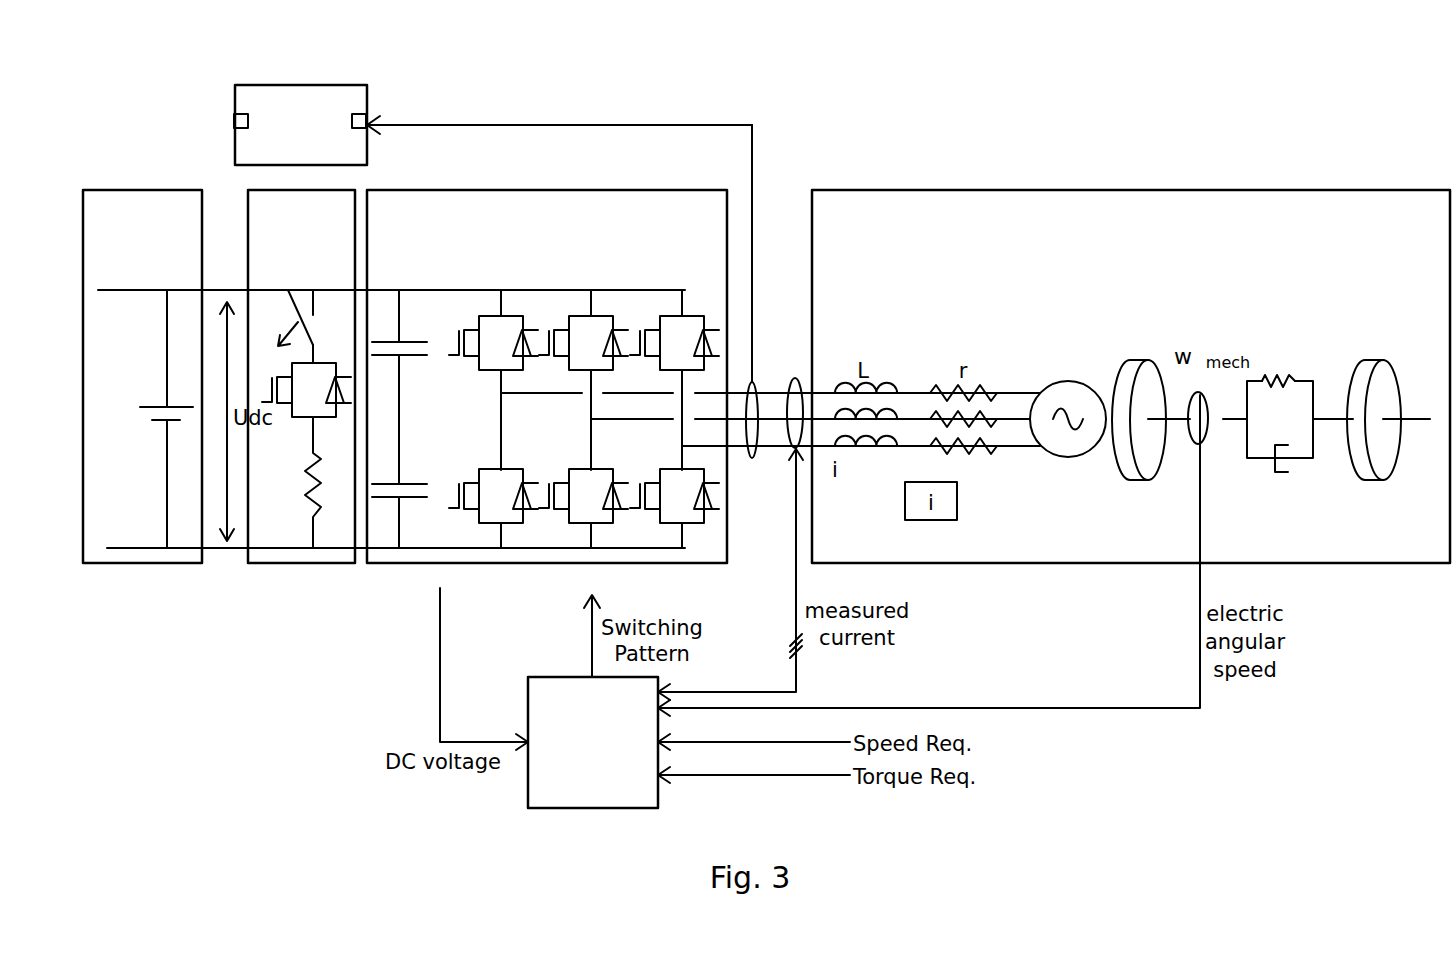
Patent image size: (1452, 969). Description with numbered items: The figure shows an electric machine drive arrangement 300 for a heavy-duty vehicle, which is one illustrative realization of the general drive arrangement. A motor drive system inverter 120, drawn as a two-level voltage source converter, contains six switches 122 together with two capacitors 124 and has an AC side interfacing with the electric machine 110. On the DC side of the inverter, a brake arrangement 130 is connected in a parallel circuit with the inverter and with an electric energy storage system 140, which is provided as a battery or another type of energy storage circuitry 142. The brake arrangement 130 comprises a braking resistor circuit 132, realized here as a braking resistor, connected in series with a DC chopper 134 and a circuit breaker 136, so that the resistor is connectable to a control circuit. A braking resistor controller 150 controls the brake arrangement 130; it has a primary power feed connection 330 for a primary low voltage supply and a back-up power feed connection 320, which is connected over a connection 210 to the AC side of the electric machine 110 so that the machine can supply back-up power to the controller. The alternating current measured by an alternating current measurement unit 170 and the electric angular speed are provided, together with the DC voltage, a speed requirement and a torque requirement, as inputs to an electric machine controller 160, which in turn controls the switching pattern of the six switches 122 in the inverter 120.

The electric machine drive arrangement 300 is at (208, 58).
The electric machine 110 is at (1109, 229).
The motor drive system inverter 120 is at (525, 229).
The switches 122 is at (600, 316).
The capacitors 124 is at (407, 483).
The brake arrangement 130 is at (278, 229).
The braking resistor circuit 132 is at (307, 464).
The DC chopper 134 is at (290, 411).
The circuit breaker 136 is at (297, 306).
The electric energy storage system 140 is at (121, 229).
The energy storage circuitry 142 is at (147, 412).
The braking resistor controller 150 is at (279, 137).
The electric machine controller 160 is at (571, 756).
The alternating current measurement unit 170 is at (790, 452).
The connection 210 is at (755, 162).
The back-up power feed connection 320 is at (366, 117).
The primary power feed connection 330 is at (234, 123).